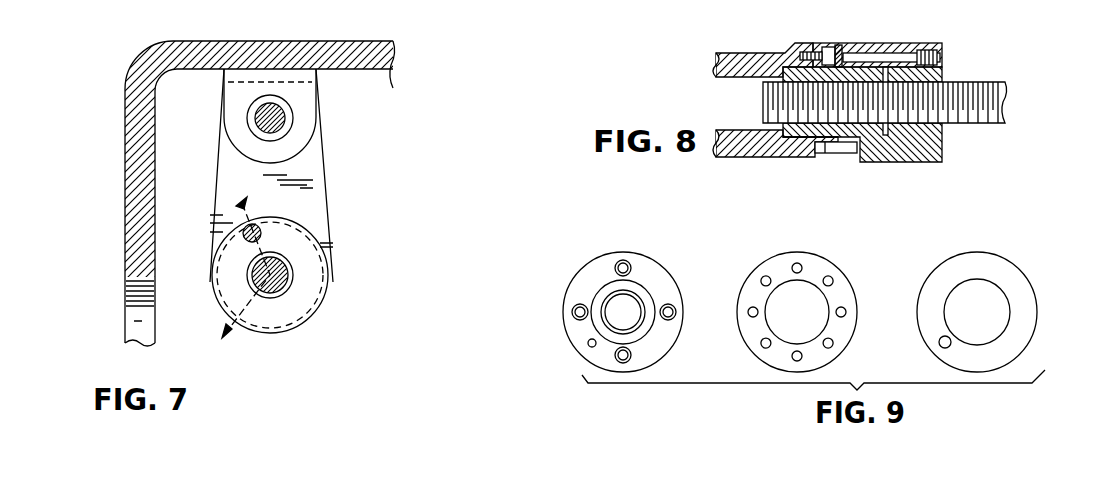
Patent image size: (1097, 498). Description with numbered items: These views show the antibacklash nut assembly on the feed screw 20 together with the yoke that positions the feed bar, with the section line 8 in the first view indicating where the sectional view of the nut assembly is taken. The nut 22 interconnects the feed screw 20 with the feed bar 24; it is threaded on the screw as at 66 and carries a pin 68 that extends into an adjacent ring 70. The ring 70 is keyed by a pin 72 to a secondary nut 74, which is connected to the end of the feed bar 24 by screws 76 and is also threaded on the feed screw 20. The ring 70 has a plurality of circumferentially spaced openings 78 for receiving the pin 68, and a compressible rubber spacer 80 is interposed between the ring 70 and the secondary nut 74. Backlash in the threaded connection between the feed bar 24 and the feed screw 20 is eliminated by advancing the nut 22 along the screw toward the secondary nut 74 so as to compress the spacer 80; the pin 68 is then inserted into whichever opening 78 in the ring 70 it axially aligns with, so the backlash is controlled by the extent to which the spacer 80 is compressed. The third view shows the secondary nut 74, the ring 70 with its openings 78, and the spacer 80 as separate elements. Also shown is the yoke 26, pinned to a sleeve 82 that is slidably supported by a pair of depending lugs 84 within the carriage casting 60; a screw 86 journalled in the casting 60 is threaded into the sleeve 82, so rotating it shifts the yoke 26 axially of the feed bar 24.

In FIG. 7, the section line 8- 8 is at (236, 267).
In FIG. 7, the feed screw 20 is at (285, 272).
In FIG. 8, the feed screw 20 is at (980, 85).
In FIG. 7, the nut 22 is at (303, 323).
In FIG. 8, the nut 22 is at (923, 163).
In FIG. 8, the feed bar 24 is at (750, 150).
In FIG. 7, the yoke 26 is at (333, 202).
In FIG. 7, the carriage casting 60 is at (394, 49).
In FIG. 8, the threaded connection 66 is at (935, 127).
In FIG. 8, the pin 68 is at (905, 55).
In FIG. 8, the ring 70 is at (850, 47).
In FIG. 9, the ring 70 is at (810, 257).
In FIG. 8, the pin 72 is at (852, 154).
In FIG. 8, the secondary nut 74 is at (820, 133).
In FIG. 9, the secondary nut 74 is at (658, 275).
In FIG. 8, the screws 76 is at (823, 47).
In FIG. 9, the openings 78 is at (832, 275).
In FIG. 8, the compressible rubber spacer 80 is at (838, 47).
In FIG. 9, the compressible rubber spacer 80 is at (1003, 263).
In FIG. 7, the sleeve 82 is at (280, 132).
In FIG. 7, the depending lugs 84 is at (307, 127).
In FIG. 7, the screw 86 is at (285, 115).